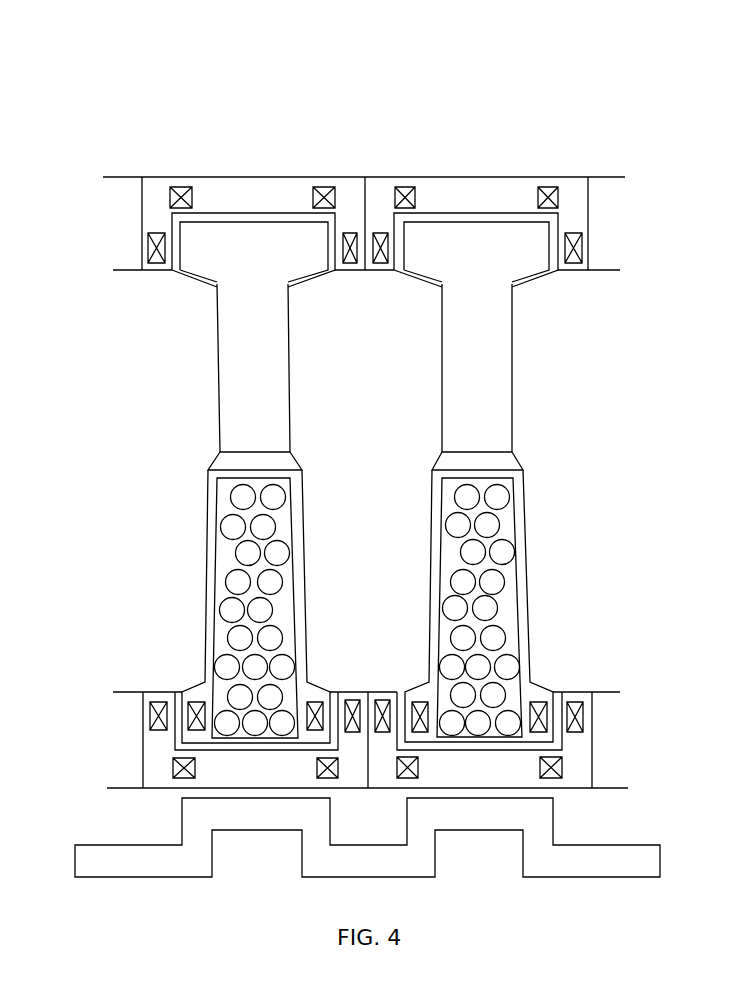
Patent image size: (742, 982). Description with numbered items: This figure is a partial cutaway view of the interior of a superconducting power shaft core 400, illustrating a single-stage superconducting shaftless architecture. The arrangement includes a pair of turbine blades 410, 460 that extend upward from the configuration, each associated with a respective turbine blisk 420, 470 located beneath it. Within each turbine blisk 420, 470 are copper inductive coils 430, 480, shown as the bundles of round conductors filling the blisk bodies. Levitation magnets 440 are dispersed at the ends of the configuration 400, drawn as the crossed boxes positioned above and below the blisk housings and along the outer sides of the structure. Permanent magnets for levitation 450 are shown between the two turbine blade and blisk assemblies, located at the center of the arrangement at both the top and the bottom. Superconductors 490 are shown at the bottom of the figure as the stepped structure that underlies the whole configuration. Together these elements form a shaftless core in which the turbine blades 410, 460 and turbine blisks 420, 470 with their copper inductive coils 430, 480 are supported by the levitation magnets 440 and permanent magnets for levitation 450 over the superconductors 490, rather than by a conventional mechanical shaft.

The superconducting power shaft core 400 is at (403, 102).
The turbine blade 410 is at (223, 460).
The turbine blisk 420 is at (213, 525).
The copper inductive coils 430 is at (237, 610).
The levitation magnets 440 is at (183, 176).
The permanent magnets for levitation 450 is at (382, 262).
The turbine blade 460 is at (510, 460).
The turbine blisk 470 is at (518, 498).
The copper inductive coils 480 is at (490, 603).
The superconductors 490 is at (255, 858).